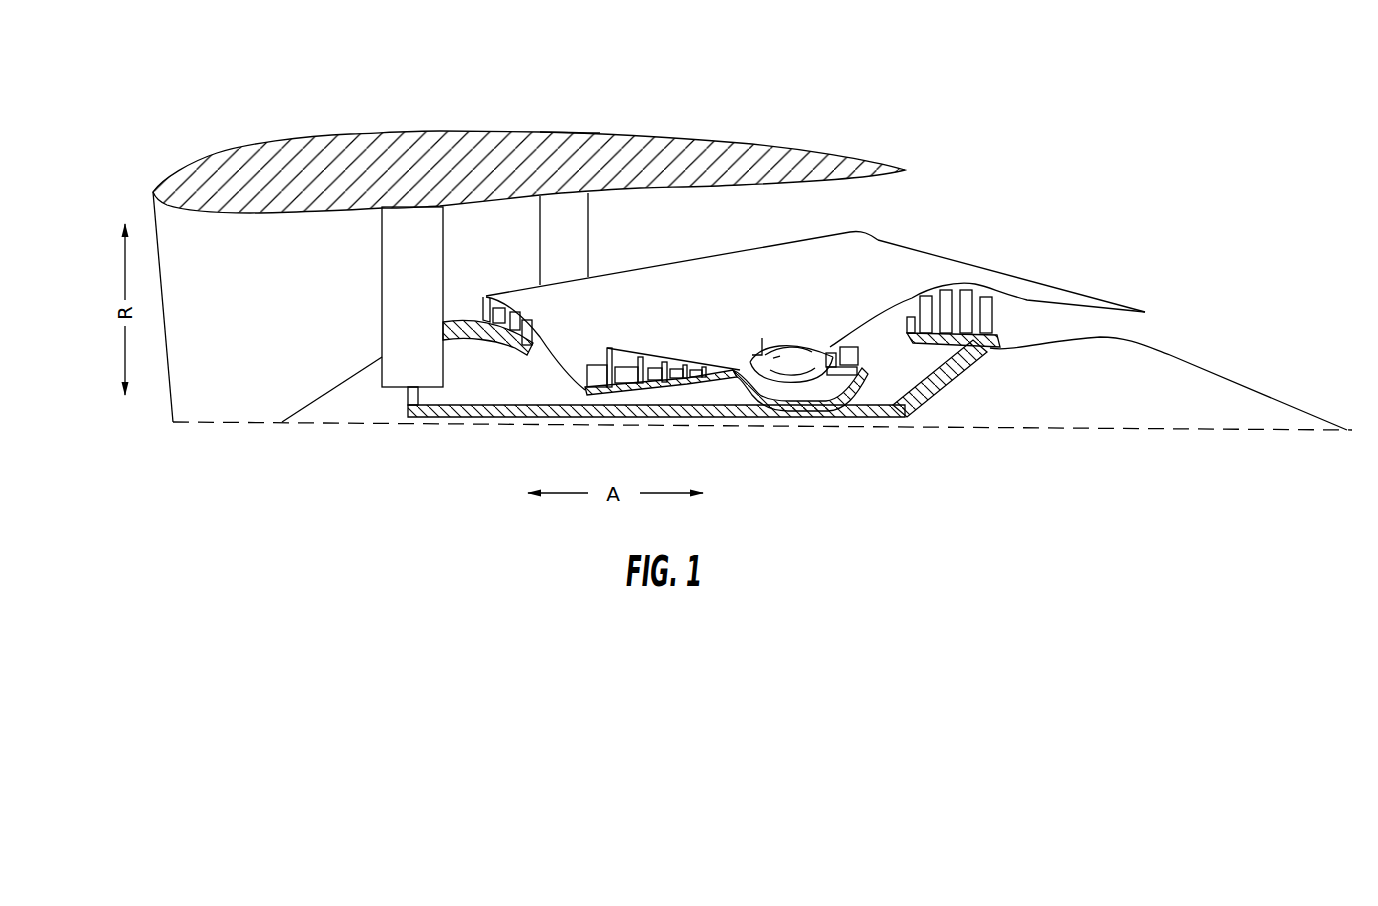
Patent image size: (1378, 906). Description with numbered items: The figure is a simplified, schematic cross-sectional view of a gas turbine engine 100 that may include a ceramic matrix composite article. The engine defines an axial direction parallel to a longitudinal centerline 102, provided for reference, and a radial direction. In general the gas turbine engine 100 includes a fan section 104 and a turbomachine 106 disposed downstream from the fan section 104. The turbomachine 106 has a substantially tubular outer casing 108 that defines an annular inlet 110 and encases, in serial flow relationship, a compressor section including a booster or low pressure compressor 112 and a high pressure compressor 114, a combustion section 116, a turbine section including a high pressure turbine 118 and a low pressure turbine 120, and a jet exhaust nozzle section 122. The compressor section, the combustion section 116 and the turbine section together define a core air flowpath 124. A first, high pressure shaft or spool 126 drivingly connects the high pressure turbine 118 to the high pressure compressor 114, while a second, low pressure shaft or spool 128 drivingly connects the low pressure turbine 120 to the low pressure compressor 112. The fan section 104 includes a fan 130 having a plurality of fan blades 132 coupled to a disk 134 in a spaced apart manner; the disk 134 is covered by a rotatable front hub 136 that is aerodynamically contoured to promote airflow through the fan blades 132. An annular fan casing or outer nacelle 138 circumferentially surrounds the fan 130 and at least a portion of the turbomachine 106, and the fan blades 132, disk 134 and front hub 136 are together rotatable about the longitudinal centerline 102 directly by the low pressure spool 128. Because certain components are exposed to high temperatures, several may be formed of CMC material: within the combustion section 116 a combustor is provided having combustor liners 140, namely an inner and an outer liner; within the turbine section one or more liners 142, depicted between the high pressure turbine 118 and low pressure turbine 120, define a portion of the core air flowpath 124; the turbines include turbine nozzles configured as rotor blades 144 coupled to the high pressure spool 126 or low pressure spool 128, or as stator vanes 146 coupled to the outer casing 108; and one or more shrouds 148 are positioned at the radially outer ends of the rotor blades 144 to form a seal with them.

The gas turbine engine 100 is at (919, 72).
The longitudinal centerline 102 is at (1178, 431).
The fan section 104 is at (347, 240).
The turbomachine 106 is at (915, 193).
The outer casing 108 is at (942, 252).
The annular inlet 110 is at (478, 311).
The low pressure compressor 112 is at (547, 312).
The high pressure compressor 114 is at (680, 334).
The combustion section 116 is at (804, 310).
The high pressure turbine 118 is at (863, 306).
The low pressure turbine 120 is at (1005, 277).
The jet exhaust nozzle section 122 is at (1100, 330).
The core air flowpath 124 is at (570, 359).
The high pressure shaft or spool 126 is at (790, 409).
The low pressure shaft or spool 128 is at (850, 411).
The fan 130 is at (343, 303).
The fan blades 132 is at (412, 297).
The disk 134 is at (380, 386).
The front hub 136 is at (313, 400).
The outer nacelle 138 is at (572, 130).
The combustor liners 140 is at (788, 340).
The liners 142 is at (872, 345).
The rotor blades 144 is at (837, 346).
The stator vanes 146 is at (859, 372).
The shrouds 148 is at (913, 303).